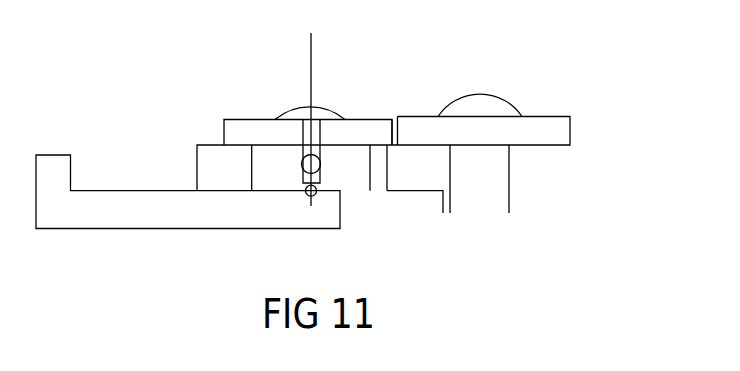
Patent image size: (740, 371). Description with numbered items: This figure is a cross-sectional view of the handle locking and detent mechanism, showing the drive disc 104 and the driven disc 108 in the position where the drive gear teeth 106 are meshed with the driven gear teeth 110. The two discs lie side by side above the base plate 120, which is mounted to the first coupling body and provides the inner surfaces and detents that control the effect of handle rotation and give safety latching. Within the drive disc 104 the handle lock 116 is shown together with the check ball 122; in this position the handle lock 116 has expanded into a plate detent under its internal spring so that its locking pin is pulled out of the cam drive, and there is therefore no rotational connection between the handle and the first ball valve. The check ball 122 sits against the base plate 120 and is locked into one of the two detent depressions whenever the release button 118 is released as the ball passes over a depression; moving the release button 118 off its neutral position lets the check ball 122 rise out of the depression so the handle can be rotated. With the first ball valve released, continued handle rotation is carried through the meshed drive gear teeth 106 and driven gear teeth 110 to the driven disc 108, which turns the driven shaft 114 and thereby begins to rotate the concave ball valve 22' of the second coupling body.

The drive disc 104 is at (240, 127).
The drive gear teeth 106 is at (392, 118).
The driven disc 108 is at (546, 125).
The driven gear teeth 110 is at (393, 116).
The driven shaft 114 is at (500, 173).
The handle lock 116 is at (322, 168).
The release button 118 is at (300, 112).
The base plate 120 is at (147, 200).
The check ball 122 is at (313, 196).
The concave ball valve 22' is at (415, 204).